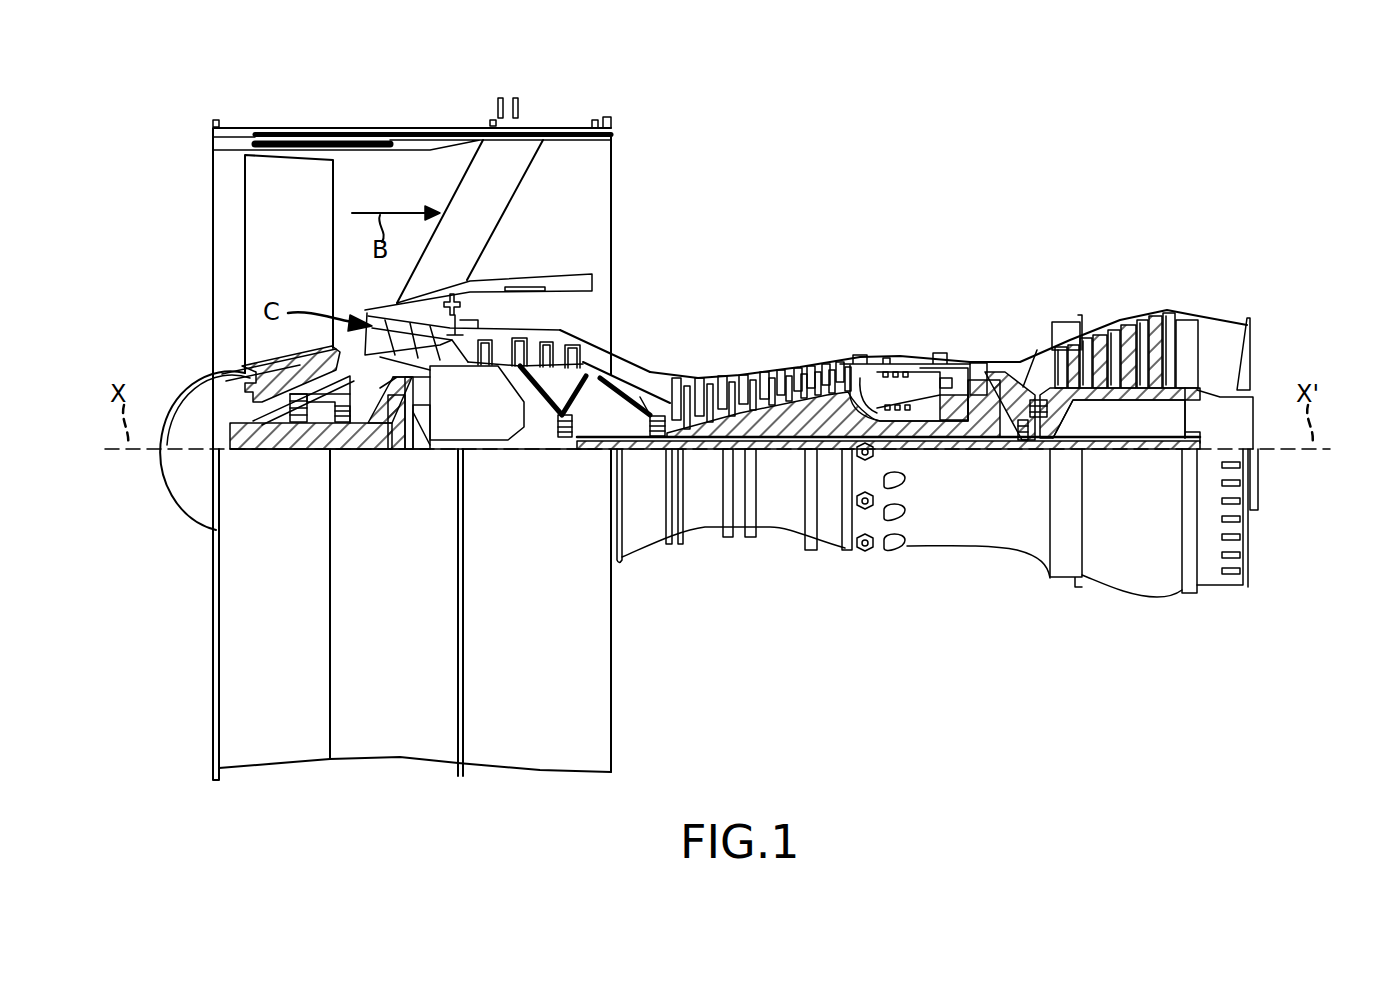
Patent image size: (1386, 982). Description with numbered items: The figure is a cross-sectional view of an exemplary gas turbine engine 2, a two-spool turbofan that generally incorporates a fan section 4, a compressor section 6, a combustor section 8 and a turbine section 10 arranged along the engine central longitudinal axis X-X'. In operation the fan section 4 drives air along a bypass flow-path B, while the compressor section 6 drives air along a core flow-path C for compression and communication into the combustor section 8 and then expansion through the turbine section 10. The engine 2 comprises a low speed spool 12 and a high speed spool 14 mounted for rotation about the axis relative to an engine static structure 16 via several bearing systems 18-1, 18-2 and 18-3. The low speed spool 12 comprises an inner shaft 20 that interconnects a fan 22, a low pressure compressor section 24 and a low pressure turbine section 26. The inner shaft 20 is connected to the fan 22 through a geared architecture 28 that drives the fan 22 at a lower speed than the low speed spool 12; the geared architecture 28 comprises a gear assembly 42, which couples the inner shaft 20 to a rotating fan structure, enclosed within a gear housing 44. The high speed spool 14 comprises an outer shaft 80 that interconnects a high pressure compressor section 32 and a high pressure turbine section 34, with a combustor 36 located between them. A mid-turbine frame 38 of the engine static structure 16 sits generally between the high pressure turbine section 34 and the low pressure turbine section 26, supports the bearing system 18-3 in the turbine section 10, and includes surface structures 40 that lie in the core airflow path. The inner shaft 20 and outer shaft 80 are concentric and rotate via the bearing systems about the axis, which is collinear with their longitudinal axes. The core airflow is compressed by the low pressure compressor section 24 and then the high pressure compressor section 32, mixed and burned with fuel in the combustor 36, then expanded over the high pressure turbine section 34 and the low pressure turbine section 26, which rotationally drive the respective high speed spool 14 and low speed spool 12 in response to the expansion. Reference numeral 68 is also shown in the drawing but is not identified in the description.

The gas turbine engine 2 is at (962, 158).
The fan section 4 is at (458, 105).
The compressor section 6 is at (467, 243).
The combustor section 8 is at (960, 241).
The turbine section 10 is at (1188, 243).
The low speed spool 12 is at (788, 478).
The high speed spool 14 is at (827, 418).
The engine static structure 16 is at (390, 746).
The bearing system 18-1 is at (300, 432).
The bearing system 18-2 is at (562, 437).
The bearing system 18-3 is at (1033, 435).
The inner shaft 20 is at (634, 455).
The fan 22 is at (303, 259).
The low pressure compressor section 24 is at (540, 343).
The low pressure turbine section 26 is at (1115, 335).
The geared architecture 28 is at (422, 470).
The high pressure compressor section 32 is at (765, 415).
The high pressure turbine section 34 is at (978, 362).
The combustor 36 is at (905, 387).
The mid-turbine frame 38 is at (1022, 362).
The surface structures 40 is at (1022, 350).
The gear assembly 42 is at (430, 432).
The gear housing 44 is at (430, 407).
The fuel injector 68 is at (960, 375).
The outer shaft 80 is at (905, 430).